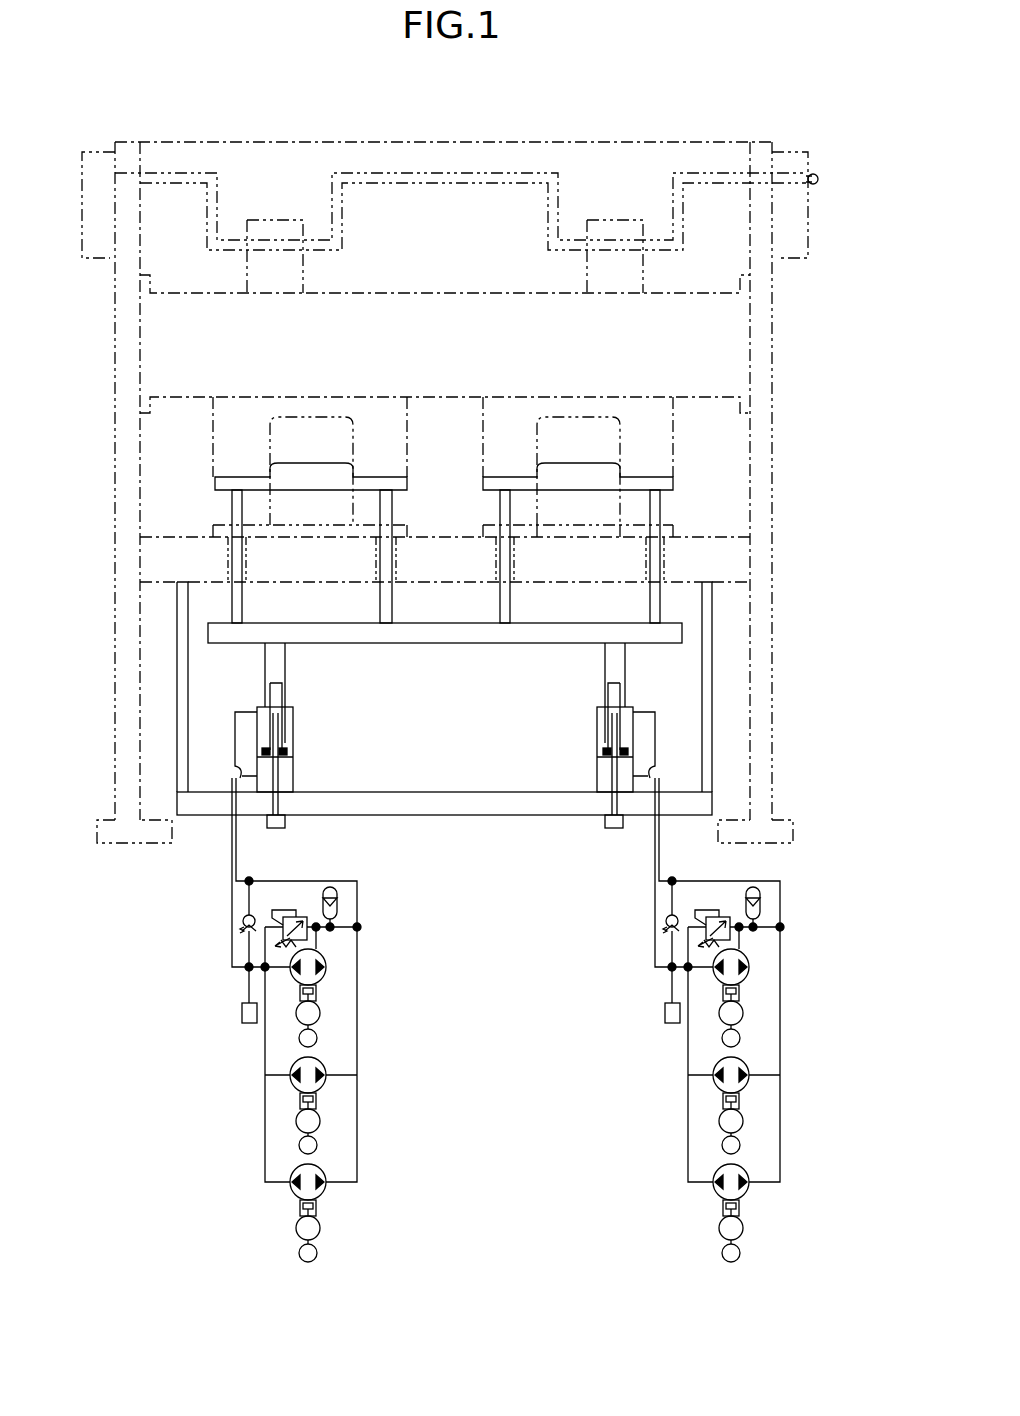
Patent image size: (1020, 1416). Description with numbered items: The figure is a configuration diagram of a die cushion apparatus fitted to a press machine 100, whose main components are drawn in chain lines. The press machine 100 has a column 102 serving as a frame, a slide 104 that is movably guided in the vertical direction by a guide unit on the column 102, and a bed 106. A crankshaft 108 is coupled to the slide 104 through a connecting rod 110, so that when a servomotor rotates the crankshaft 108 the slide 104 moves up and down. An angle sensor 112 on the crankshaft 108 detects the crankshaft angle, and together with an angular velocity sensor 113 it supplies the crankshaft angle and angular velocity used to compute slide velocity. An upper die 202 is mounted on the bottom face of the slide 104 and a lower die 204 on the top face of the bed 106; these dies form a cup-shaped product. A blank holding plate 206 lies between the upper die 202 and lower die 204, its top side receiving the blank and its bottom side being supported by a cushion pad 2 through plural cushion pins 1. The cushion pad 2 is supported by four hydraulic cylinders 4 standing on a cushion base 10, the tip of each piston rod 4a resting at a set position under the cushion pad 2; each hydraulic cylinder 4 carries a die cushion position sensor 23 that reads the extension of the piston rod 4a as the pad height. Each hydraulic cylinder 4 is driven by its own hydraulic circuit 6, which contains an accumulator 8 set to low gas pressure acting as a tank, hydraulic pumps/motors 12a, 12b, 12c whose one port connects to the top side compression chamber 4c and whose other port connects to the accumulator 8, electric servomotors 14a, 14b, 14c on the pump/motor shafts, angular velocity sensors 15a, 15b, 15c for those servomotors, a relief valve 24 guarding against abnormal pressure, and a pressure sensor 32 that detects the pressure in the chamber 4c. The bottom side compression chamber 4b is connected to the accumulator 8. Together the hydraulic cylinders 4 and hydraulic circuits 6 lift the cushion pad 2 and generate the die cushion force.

The press machine 100 is at (599, 133).
The crankshaft 108 is at (429, 142).
The connecting rod 110 is at (305, 275).
The angle sensor 112 is at (819, 179).
The angular velocity sensor 113 is at (816, 186).
The slide 104 is at (735, 345).
The column 102 is at (775, 423).
The upper die 202 is at (673, 440).
The lower die 204 is at (615, 507).
The blank holding plate 206 is at (225, 482).
The cushion pin 1 is at (235, 510).
The bed 106 is at (722, 538).
The cushion pad 2 is at (682, 633).
The hydraulic cylinder 4 is at (445, 729).
The piston rod 4a is at (285, 672).
The bottom side compression chamber 4b is at (293, 718).
The top side compression chamber 4c is at (303, 744).
The cushion base 10 is at (443, 816).
The die cushion position sensor 23 is at (285, 828).
The relief valve 24 is at (305, 920).
The accumulator 8 is at (339, 905).
The hydraulic circuit 6 is at (489, 1022).
The pressure sensor 32 is at (242, 1013).
The hydraulic pump/motor 12a is at (326, 960).
The electric servomotor 14a is at (320, 1010).
The angular velocity sensor 15a is at (317, 1035).
The hydraulic pump/motor 12b is at (326, 1068).
The electric servomotor 14b is at (320, 1118).
The angular velocity sensor 15b is at (317, 1143).
The hydraulic pump/motor 12c is at (326, 1175).
The electric servomotor 14c is at (320, 1225).
The angular velocity sensor 15c is at (317, 1250).